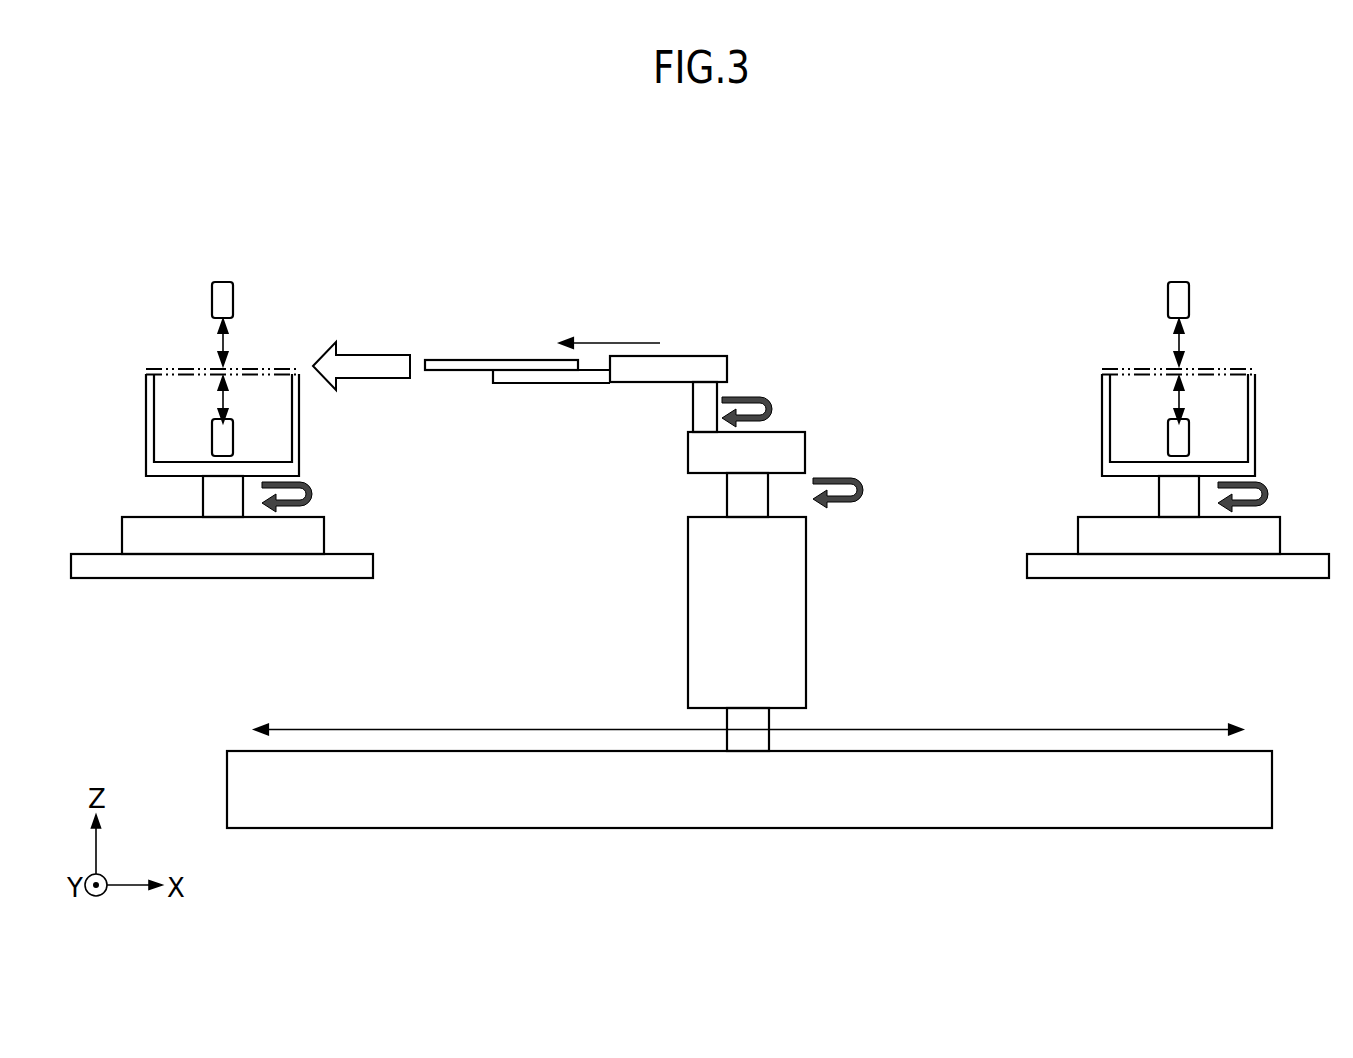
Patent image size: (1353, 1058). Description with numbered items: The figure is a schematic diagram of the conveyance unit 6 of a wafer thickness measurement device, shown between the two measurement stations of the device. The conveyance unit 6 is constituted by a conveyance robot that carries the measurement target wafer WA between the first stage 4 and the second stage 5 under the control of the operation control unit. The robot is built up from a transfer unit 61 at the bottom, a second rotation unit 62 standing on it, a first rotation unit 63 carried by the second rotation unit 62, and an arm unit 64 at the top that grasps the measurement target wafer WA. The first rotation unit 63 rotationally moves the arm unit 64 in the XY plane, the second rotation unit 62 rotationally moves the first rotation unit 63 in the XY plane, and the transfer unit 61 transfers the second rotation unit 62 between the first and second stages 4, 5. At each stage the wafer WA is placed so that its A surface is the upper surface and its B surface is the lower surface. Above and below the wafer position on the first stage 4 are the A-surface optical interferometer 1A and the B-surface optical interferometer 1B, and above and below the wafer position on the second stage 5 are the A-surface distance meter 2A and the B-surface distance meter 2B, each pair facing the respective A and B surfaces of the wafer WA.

The A-surface optical interferometer 1A is at (1193, 296).
The B-surface optical interferometer 1B is at (1193, 438).
The A-surface distance meter 2A is at (235, 296).
The B-surface distance meter 2B is at (235, 438).
The first stage 4 is at (1178, 449).
The second stage 5 is at (222, 449).
The conveyance unit 6 is at (784, 543).
The transfer unit 61 is at (1273, 786).
The second rotation unit 62 is at (808, 585).
The first rotation unit 63 is at (808, 444).
The arm unit 64 is at (712, 355).
The measurement target wafer WA is at (176, 368).